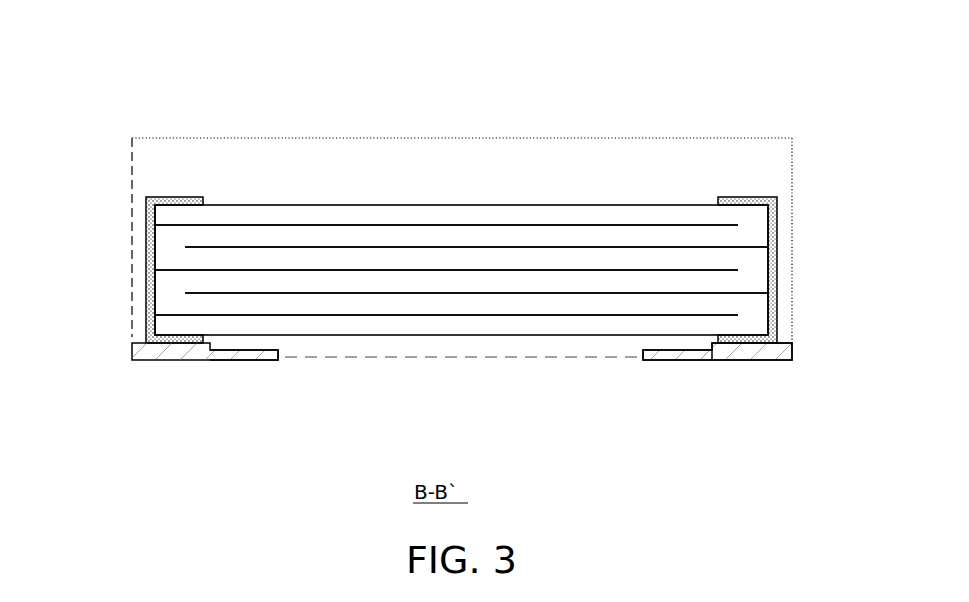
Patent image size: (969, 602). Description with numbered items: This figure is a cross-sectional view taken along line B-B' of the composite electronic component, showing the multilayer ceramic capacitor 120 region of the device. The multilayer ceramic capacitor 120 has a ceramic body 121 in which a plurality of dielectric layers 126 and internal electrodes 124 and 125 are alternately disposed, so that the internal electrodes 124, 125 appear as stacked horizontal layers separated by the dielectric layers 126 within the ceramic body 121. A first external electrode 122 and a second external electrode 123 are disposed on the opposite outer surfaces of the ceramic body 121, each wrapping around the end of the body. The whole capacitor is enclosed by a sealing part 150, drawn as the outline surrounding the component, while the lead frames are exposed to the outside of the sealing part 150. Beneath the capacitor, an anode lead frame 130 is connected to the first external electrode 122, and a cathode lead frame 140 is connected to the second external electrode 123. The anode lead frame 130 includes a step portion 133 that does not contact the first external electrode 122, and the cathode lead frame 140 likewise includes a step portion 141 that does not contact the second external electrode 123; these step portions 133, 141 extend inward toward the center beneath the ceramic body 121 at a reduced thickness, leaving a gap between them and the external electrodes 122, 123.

The multilayer ceramic capacitor 120 is at (502, 213).
The ceramic body 121 is at (473, 205).
The first external electrode 122 is at (776, 258).
The second external electrode 123 is at (145, 262).
The internal electrode 124 is at (777, 310).
The internal electrode 125 is at (168, 315).
The dielectric layer 126 is at (770, 357).
The anode lead frame 130 is at (735, 361).
The step portion 133 is at (647, 338).
The cathode lead frame 140 is at (163, 361).
The step portion 141 is at (283, 337).
The sealing part 150 is at (685, 137).